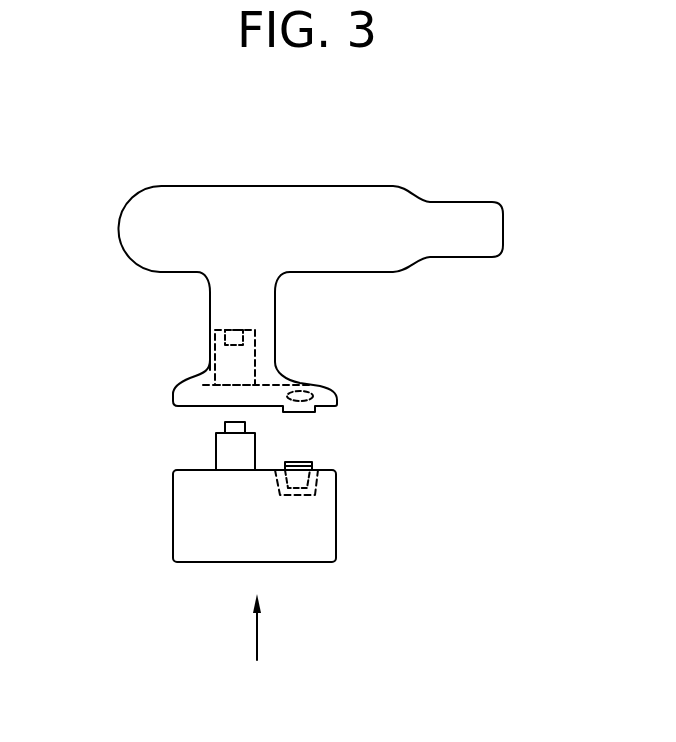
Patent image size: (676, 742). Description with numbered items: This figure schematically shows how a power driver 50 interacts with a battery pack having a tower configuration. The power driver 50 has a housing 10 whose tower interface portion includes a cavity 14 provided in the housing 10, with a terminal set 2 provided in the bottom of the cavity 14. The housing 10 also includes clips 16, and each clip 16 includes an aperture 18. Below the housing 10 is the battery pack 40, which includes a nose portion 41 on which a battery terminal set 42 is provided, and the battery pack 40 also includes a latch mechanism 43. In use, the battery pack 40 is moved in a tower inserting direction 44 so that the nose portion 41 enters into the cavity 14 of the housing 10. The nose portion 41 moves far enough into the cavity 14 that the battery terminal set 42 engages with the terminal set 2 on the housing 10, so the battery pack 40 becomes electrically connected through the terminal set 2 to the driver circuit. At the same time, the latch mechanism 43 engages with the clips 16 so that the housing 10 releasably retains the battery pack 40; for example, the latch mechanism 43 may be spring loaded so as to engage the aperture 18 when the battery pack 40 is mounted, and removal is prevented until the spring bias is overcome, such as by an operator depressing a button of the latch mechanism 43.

The power driver 50 is at (370, 160).
The housing 10 is at (207, 186).
The terminal set 2 is at (238, 346).
The cavity 14 is at (208, 363).
The aperture 18 is at (313, 387).
The clip 16 is at (303, 407).
The battery pack 40 is at (173, 522).
The nose portion 41 is at (216, 447).
The battery terminal set 42 is at (225, 428).
The latch mechanism 43 is at (312, 463).
The tower inserting direction 44 is at (257, 635).